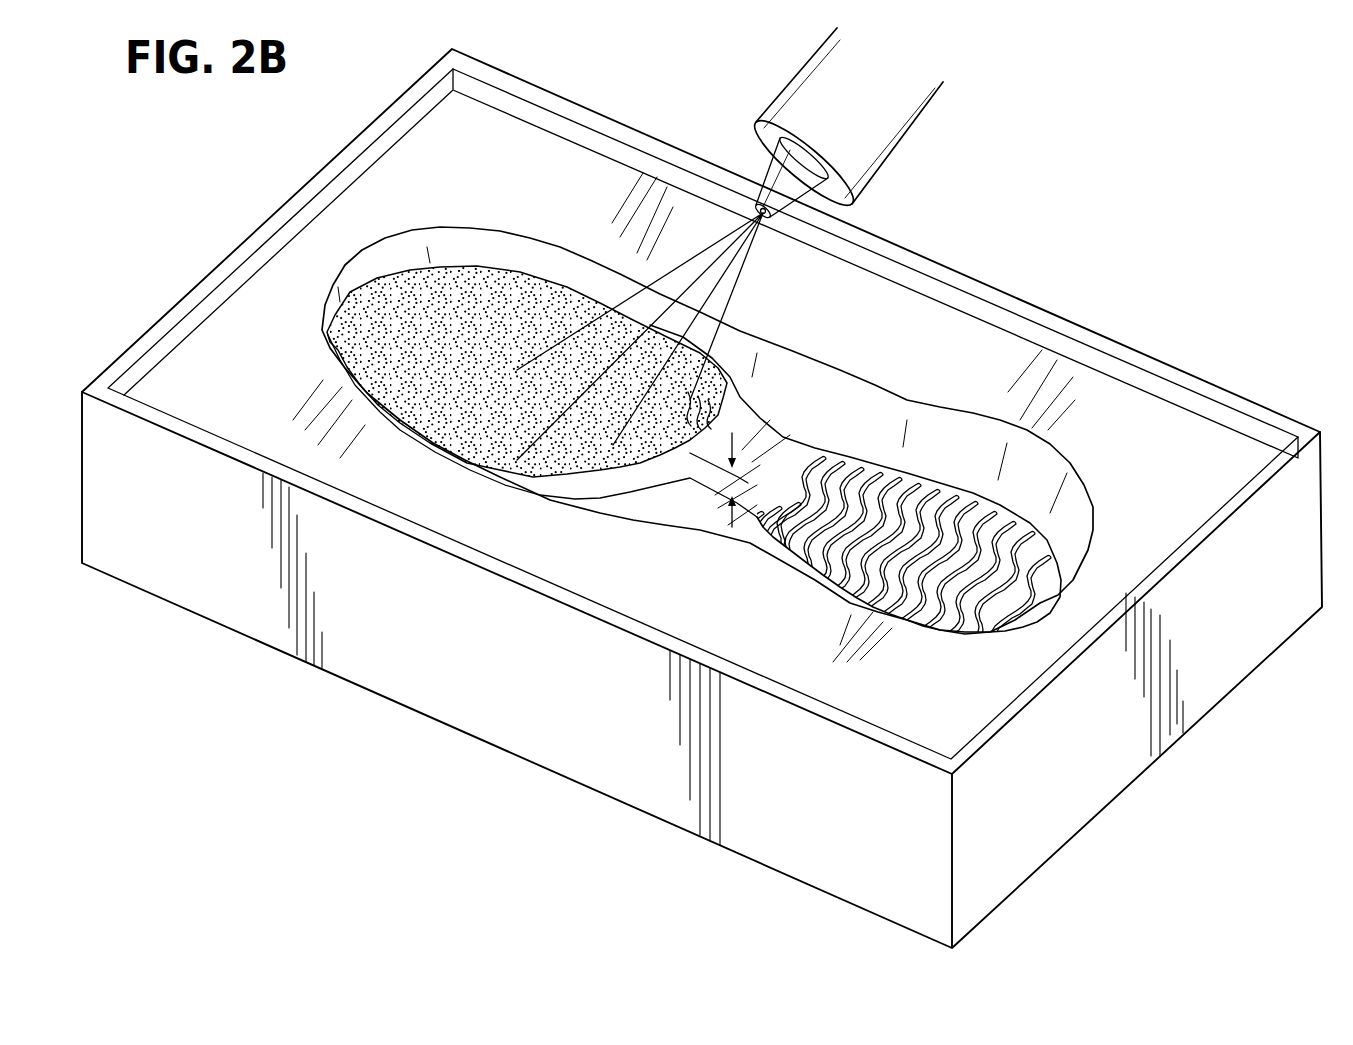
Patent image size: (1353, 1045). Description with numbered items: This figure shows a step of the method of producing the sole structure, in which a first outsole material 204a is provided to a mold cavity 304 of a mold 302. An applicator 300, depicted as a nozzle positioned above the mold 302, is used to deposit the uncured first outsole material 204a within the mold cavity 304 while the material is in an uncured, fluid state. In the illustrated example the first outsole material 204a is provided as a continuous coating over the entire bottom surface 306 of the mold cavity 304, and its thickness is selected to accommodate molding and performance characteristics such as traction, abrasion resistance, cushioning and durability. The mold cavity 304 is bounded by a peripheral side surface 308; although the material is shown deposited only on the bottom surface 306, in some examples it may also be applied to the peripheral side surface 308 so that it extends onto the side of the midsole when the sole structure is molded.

The first outsole material 204a is at (738, 397).
The applicator 300 is at (918, 115).
The mold 302 is at (1170, 352).
The mold cavity 304 is at (958, 442).
The bottom surface 306 is at (757, 457).
The peripheral side surface 308 is at (858, 432).